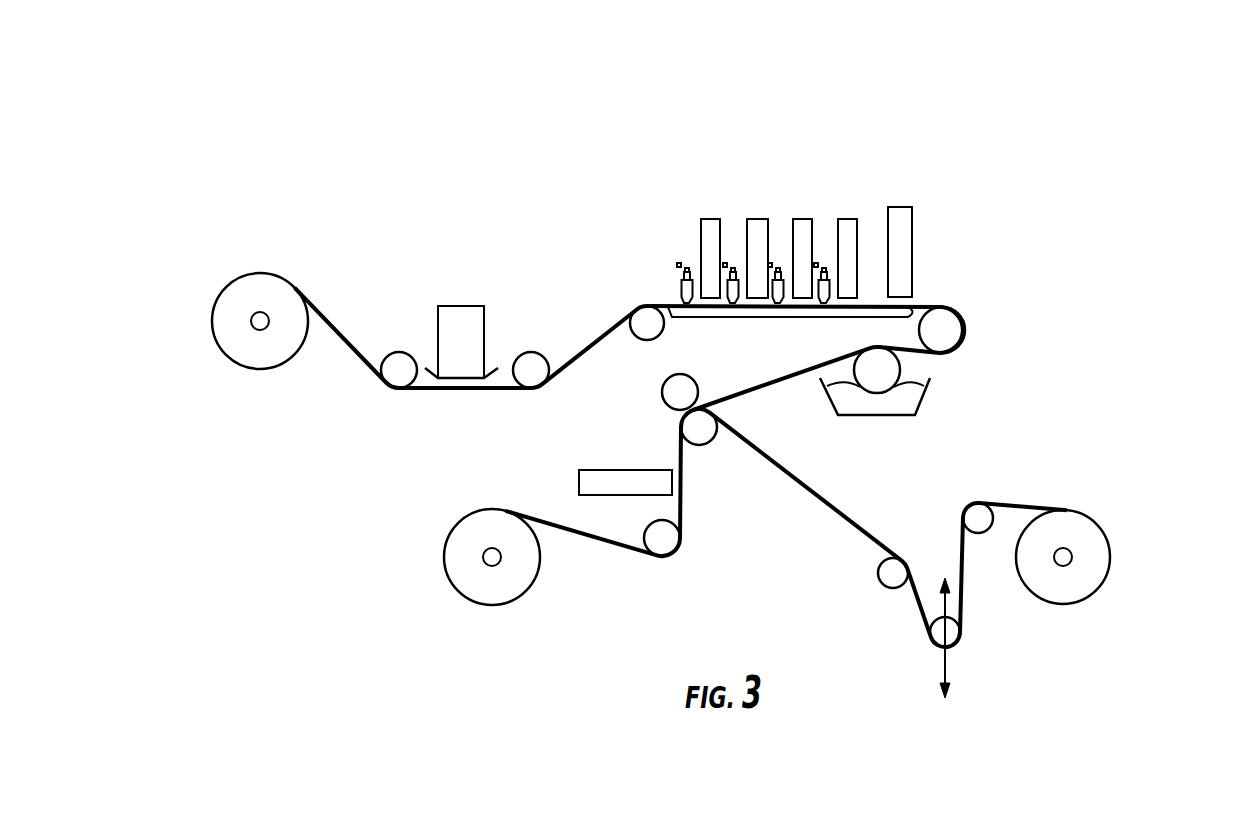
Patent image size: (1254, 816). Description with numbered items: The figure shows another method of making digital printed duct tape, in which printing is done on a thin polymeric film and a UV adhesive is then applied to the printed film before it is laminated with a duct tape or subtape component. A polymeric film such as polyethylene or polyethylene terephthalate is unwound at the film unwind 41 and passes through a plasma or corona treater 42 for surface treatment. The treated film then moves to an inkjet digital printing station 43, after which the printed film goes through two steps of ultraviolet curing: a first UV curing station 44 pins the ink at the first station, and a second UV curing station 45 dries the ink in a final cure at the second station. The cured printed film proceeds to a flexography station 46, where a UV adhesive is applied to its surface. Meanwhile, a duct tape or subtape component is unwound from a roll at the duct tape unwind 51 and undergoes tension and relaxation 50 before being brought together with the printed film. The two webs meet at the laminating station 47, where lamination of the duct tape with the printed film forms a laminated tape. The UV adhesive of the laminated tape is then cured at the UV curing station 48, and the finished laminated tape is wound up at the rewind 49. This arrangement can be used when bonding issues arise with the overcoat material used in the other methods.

The film unwind 41 is at (243, 273).
The plasma or corona treater 42 is at (462, 313).
The inkjet digital printing station 43 is at (822, 268).
The first UV curing station 44 is at (847, 219).
The second UV curing station 45 is at (900, 207).
The flexography station 46 is at (855, 400).
The laminating station 47 is at (717, 447).
The UV curing of UV adhesive 48 is at (625, 470).
The rewind 49 is at (460, 533).
The tension and relaxation 50 is at (960, 635).
The duct tape unwind 51 is at (1100, 523).